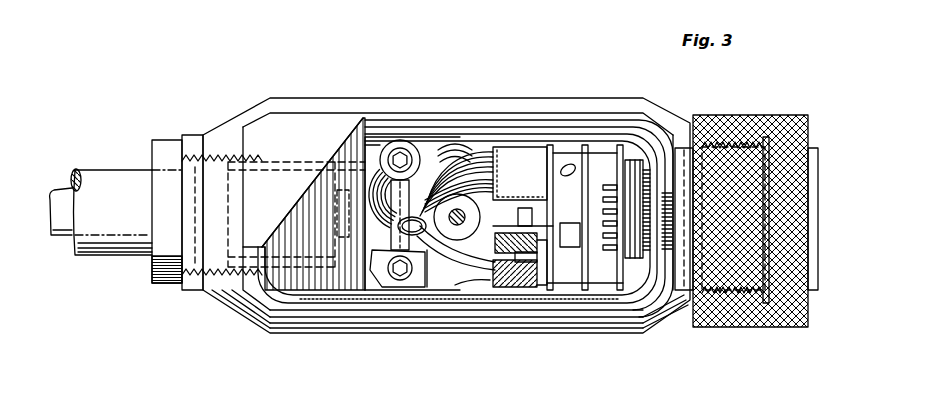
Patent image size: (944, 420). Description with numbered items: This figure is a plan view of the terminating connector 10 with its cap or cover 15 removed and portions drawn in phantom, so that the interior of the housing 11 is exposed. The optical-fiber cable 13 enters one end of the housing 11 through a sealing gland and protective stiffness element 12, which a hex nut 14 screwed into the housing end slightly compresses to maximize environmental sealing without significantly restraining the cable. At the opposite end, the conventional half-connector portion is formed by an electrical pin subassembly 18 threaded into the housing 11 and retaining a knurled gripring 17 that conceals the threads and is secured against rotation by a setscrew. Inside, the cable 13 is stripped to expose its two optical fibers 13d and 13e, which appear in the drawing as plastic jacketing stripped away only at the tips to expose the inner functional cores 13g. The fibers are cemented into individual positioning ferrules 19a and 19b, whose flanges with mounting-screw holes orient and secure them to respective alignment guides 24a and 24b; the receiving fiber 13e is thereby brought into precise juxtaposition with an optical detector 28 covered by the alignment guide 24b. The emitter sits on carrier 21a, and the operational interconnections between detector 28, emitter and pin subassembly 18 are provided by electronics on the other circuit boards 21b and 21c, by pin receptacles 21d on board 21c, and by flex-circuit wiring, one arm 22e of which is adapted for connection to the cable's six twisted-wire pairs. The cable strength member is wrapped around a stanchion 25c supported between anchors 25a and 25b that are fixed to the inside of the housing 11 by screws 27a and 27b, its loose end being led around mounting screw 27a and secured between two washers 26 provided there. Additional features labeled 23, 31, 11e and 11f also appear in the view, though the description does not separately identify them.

The terminating connector 10 is at (178, 347).
The housing 11 is at (222, 300).
The sealing gland and protective stiffness element 12 is at (125, 243).
The optical-fiber cable 13 is at (63, 200).
The hex nut 14 is at (158, 155).
The cap or cover 15 is at (262, 137).
The knurled gripring 17 is at (735, 122).
The electrical pin subassembly 18 is at (824, 169).
The positioning ferrule 19a is at (505, 140).
The positioning ferrule 19b is at (496, 290).
The carrier 21a is at (553, 145).
The circuit board 21b is at (588, 145).
The circuit board 21c is at (660, 290).
The pin receptacles 21d is at (620, 145).
The flex circuit arm 22e is at (452, 145).
The housing liner 23 is at (410, 135).
The alignment guide 24a is at (525, 145).
The alignment guide 24b is at (520, 290).
The anchor 25a is at (370, 165).
The anchor 25b is at (402, 287).
The stanchion 25c is at (360, 190).
The washers 26 is at (385, 135).
The mounting screw 27a is at (385, 152).
The screw 27b is at (392, 287).
The optical detector 28 is at (590, 283).
The potting block 31 is at (300, 305).
The pivot disc 11e is at (470, 215).
The pivot arm 11f is at (460, 240).
The optical fiber 13d is at (455, 140).
The optical fiber 13e is at (468, 285).
The inner functional cores 13g is at (535, 287).